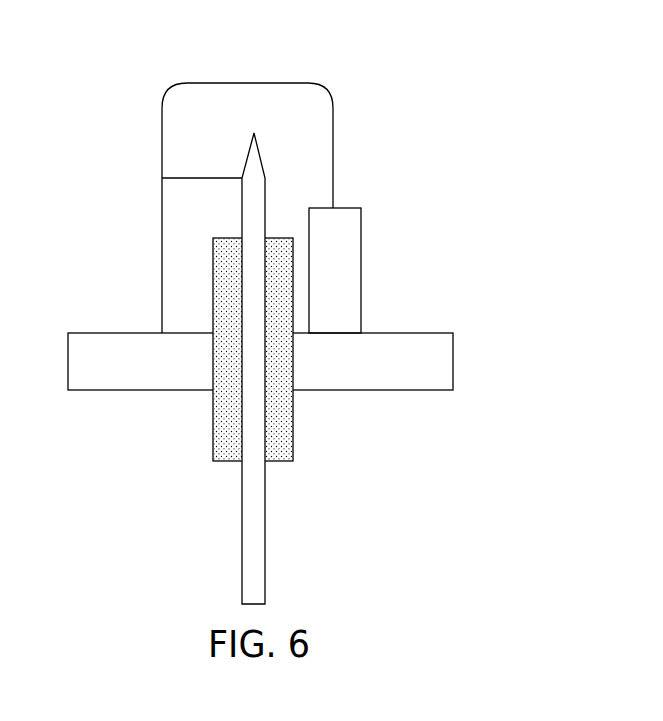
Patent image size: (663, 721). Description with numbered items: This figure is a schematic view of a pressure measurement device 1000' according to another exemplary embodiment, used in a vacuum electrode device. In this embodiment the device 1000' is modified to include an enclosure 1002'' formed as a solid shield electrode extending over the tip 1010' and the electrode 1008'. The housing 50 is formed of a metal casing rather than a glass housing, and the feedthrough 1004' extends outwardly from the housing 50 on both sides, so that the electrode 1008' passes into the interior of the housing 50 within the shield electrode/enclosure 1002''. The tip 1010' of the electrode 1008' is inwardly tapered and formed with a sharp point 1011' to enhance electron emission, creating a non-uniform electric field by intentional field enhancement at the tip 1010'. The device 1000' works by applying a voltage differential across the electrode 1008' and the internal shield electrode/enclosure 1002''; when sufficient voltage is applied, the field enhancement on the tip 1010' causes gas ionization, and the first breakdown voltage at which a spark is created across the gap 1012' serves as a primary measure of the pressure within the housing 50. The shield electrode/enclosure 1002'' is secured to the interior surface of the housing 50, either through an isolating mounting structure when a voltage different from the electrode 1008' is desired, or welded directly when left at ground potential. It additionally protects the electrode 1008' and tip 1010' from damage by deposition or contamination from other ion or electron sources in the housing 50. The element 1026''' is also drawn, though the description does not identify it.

The pressure measurement device 1000' is at (304, 178).
The shield electrode/enclosure 1002'' is at (197, 201).
The feedthrough 1004' is at (309, 349).
The electrode 1008' is at (311, 368).
The tip 1010' is at (174, 143).
The sharp point 1011' is at (268, 93).
The gap 1012' is at (149, 171).
The support block 1026''' is at (393, 270).
The housing 50 is at (454, 362).